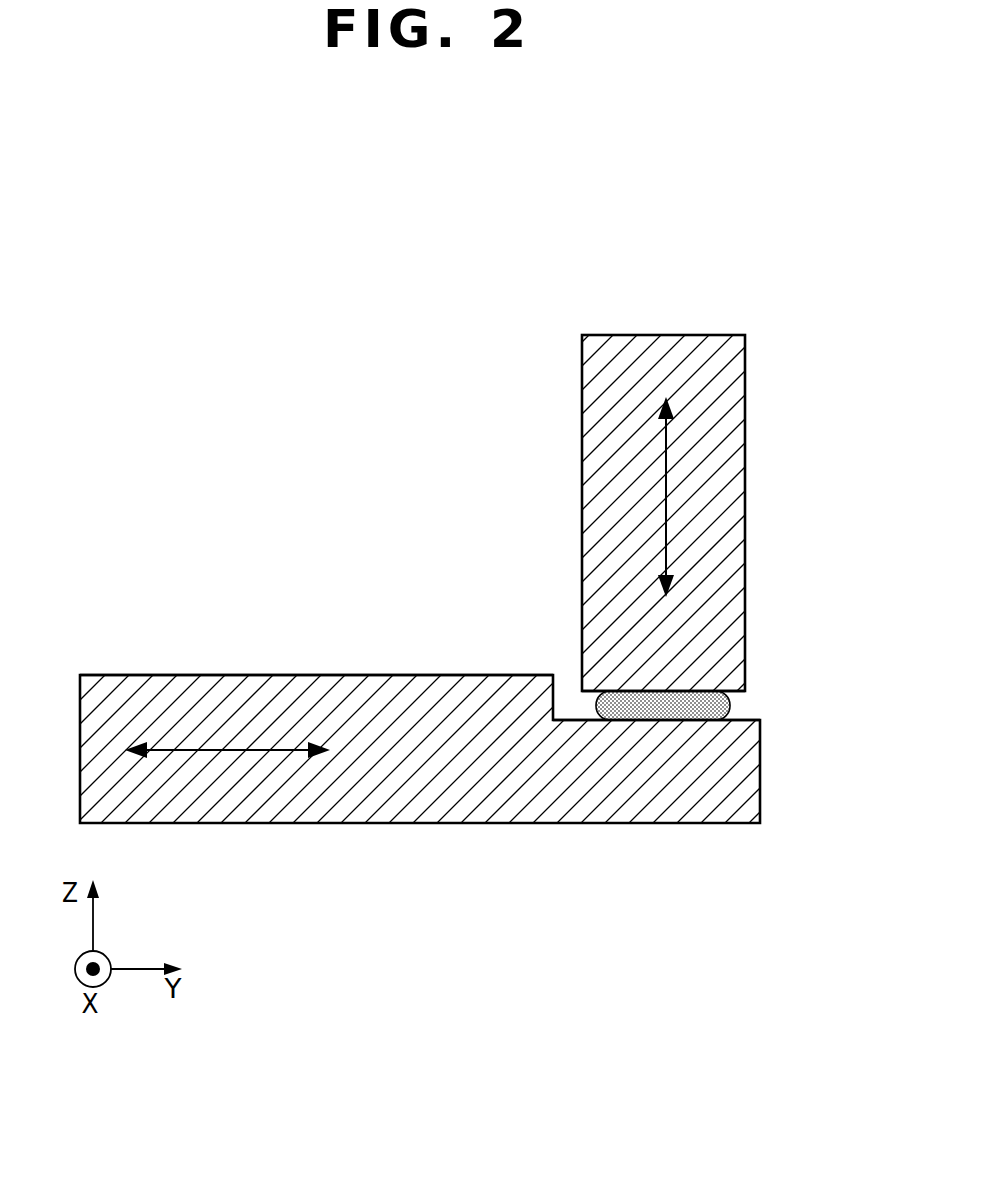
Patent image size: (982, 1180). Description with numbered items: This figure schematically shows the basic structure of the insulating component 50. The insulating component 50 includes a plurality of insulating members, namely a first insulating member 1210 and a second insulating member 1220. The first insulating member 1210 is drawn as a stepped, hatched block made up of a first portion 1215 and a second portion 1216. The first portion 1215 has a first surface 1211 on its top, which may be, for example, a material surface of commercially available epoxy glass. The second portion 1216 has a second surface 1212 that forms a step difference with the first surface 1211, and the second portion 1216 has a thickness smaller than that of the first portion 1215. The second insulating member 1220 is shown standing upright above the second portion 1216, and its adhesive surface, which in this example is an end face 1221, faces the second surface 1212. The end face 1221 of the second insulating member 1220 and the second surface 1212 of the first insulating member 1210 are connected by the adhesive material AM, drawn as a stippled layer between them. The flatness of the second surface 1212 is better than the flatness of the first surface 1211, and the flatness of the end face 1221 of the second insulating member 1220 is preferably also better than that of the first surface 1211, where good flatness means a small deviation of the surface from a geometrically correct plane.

The insulating component 50 is at (310, 383).
The first insulating member 1210 is at (685, 900).
The first surface 1211 is at (270, 662).
The second surface 1212 is at (756, 707).
The first portion 1215 is at (82, 842).
The second portion 1216 is at (755, 842).
The second insulating member 1220 is at (740, 455).
The end face 1221 is at (733, 678).
The adhesive material AM is at (615, 707).